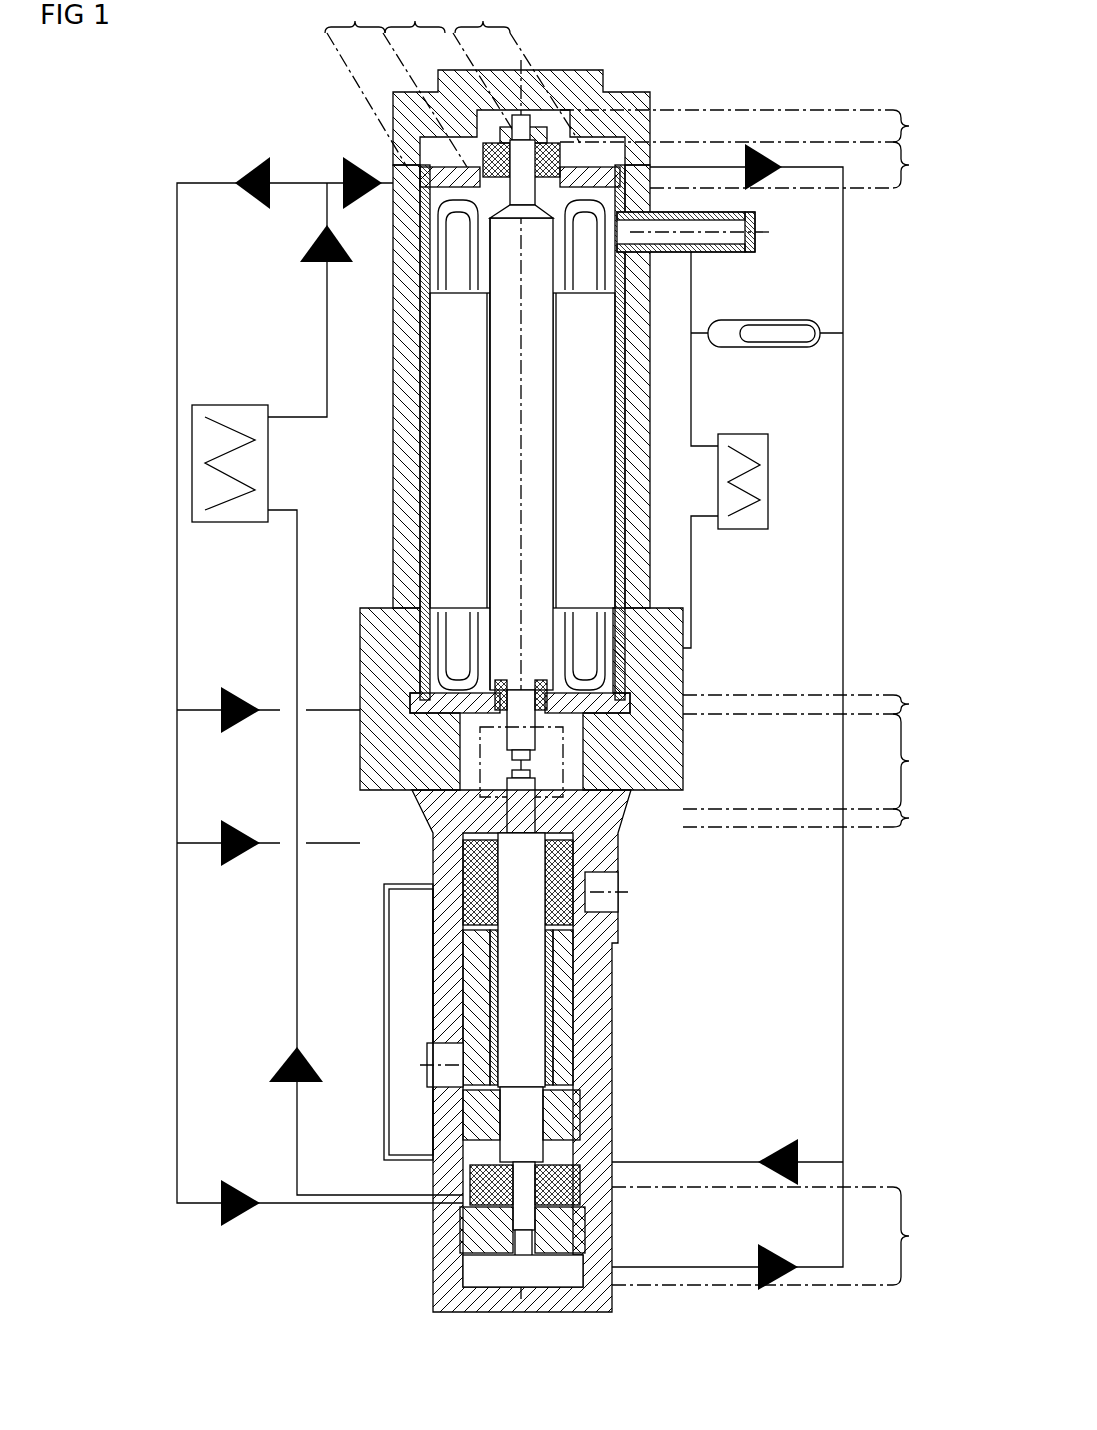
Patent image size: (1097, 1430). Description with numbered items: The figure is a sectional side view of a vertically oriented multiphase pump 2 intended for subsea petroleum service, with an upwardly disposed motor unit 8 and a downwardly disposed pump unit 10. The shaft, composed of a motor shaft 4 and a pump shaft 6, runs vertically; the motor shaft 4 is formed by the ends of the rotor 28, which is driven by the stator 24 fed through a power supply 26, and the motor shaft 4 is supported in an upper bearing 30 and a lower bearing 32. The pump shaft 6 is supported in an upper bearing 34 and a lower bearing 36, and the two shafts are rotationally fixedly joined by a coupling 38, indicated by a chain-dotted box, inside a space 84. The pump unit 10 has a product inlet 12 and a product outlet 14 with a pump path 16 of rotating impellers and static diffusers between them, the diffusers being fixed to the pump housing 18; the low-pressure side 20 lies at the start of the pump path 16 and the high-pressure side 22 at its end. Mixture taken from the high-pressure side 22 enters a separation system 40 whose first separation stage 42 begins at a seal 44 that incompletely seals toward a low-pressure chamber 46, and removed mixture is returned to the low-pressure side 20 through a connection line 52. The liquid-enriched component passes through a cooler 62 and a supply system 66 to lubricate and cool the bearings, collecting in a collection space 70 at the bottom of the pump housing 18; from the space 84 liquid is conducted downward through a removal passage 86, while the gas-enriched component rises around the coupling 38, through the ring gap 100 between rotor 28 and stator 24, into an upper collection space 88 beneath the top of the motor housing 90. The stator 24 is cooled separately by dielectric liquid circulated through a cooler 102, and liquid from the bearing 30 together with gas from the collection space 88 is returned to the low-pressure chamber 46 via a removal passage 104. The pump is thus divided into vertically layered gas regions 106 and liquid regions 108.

The multiphase pump 2 is at (790, 106).
The motor shaft 4 is at (420, 685).
The pump shaft 6 is at (535, 858).
The motor unit 8 is at (386, 328).
The pump unit 10 is at (622, 1012).
The product inlet 12 is at (610, 890).
The product outlet 14 is at (452, 1060).
The pump path 16 is at (572, 968).
The pump housing 18 is at (607, 1062).
The low-pressure side 20 is at (470, 850).
The high-pressure side 22 is at (575, 1090).
The stator 24 is at (590, 377).
The power supply 26 is at (717, 240).
The rotor 28 is at (535, 553).
The bearing 30 is at (572, 150).
The bearing 32 is at (590, 650).
The bearing 34 is at (556, 797).
The bearing 36 is at (575, 1230).
The coupling 38 is at (572, 688).
The separation system 40 is at (622, 1152).
The first separation stage 42 is at (585, 1195).
The seal 44 is at (480, 1125).
The low-pressure chamber 46 is at (470, 1175).
The connection line 52 is at (384, 935).
The cooler 62 is at (240, 405).
The supply system 66 is at (177, 605).
The collection space 70 is at (475, 1277).
The space 84 is at (425, 800).
The removal passage 86 is at (578, 830).
The upper collection space 88 is at (437, 147).
The motor housing 90 is at (398, 158).
The ring gap 100 is at (487, 440).
The cooler 102 is at (770, 470).
The removal passage 104 is at (843, 277).
The gas regions 106 is at (673, 404).
The liquid regions 108 is at (644, 642).